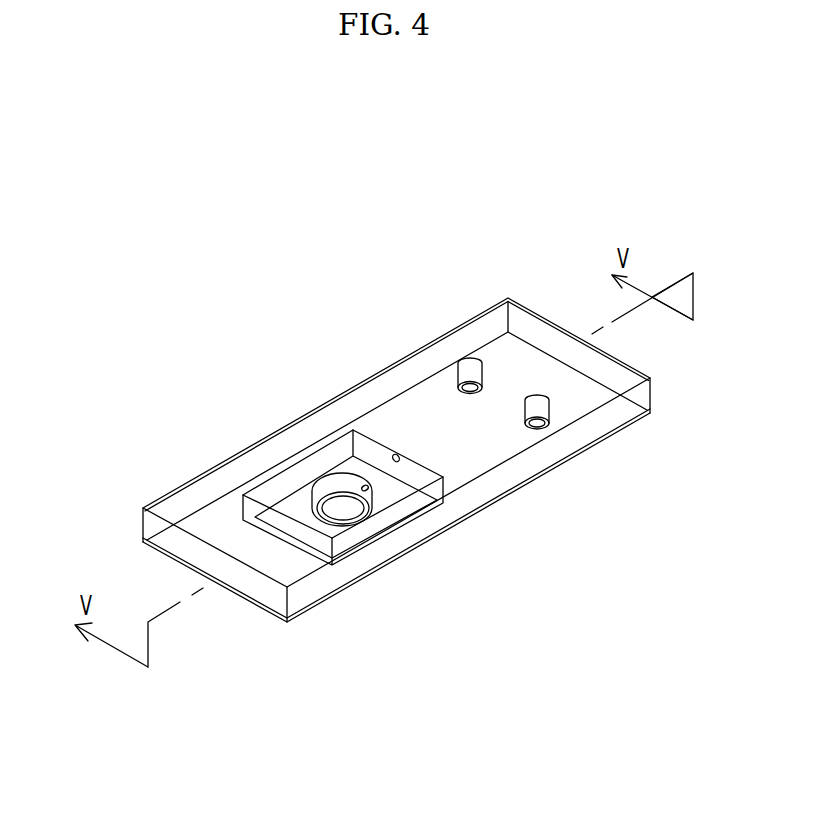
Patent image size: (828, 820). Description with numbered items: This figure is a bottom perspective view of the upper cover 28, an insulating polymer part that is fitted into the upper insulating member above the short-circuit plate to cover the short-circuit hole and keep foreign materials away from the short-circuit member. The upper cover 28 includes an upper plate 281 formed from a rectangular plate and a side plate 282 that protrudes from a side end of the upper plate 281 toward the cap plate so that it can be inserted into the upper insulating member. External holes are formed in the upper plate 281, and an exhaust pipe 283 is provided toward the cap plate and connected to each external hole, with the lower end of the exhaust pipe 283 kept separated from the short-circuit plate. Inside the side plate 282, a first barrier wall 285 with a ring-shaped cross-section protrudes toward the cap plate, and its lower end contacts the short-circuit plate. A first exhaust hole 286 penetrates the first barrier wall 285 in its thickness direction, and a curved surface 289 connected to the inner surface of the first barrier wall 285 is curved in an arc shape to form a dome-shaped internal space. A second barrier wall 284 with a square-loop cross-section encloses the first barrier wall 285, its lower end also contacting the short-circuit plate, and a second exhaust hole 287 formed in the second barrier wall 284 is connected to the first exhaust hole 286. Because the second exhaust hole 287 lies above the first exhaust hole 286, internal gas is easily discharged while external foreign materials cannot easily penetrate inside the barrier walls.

The upper cover 28 is at (452, 314).
The upper plate 281 is at (477, 462).
The side plate 282 is at (211, 482).
The exhaust pipe 283 is at (547, 407).
The second barrier wall 284 is at (402, 510).
The first barrier wall 285 is at (323, 484).
The first exhaust hole 286 is at (360, 487).
The second exhaust hole 287 is at (394, 456).
The curved surface 289 is at (347, 508).